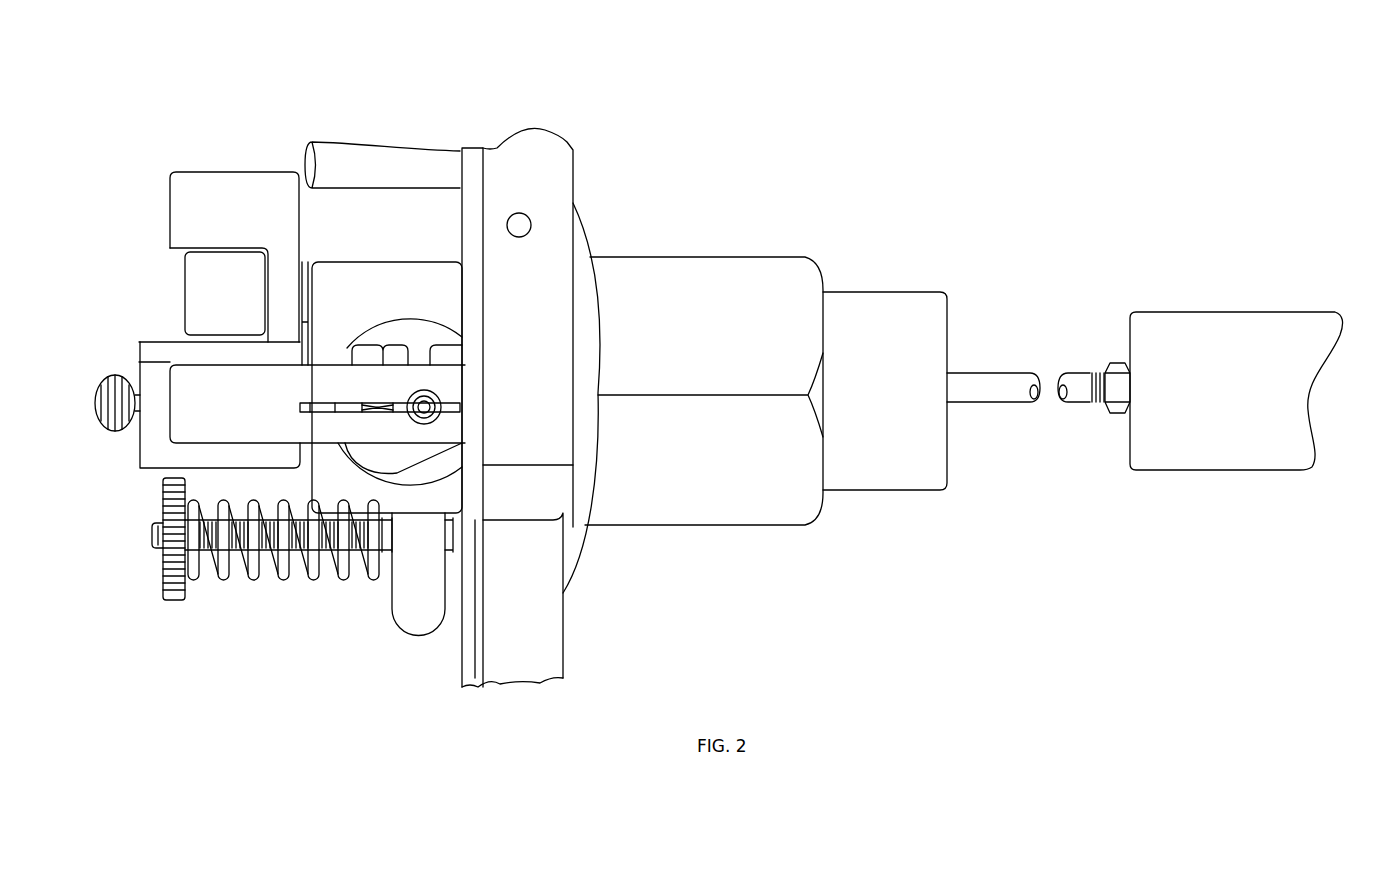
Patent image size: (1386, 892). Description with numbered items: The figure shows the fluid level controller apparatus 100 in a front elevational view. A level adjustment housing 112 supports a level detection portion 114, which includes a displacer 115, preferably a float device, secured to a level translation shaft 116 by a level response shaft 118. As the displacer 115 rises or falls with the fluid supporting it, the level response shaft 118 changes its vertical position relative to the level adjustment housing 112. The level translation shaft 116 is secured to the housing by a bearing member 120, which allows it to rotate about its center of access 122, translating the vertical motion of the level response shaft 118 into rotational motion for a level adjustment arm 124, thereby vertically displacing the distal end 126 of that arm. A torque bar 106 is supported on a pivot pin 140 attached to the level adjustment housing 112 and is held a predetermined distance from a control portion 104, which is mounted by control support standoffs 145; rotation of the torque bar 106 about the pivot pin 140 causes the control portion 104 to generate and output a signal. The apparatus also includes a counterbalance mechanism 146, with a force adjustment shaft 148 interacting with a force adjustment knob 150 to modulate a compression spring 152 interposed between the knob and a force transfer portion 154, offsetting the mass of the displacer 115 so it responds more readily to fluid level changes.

The fluid level controller apparatus 100 is at (693, 97).
The control portion 104 is at (545, 597).
The torque bar 106 is at (197, 298).
The level adjustment housing 112 is at (402, 280).
The level detection portion 114 is at (1224, 376).
The displacer 115 is at (1200, 420).
The level translation shaft 116 is at (437, 400).
The level response shaft 118 is at (973, 388).
The bearing member 120 is at (416, 342).
The center of access 122 is at (440, 412).
The level adjustment arm 124 is at (243, 427).
The distal end 126 is at (172, 405).
The pivot pin 140 is at (304, 282).
The control support standoffs 145 is at (367, 143).
The counterbalance mechanism 146 is at (179, 622).
The force adjustment shaft 148 is at (278, 555).
The force adjustment knob 150 is at (163, 573).
The compression spring 152 is at (283, 572).
The force transfer portion 154 is at (418, 622).